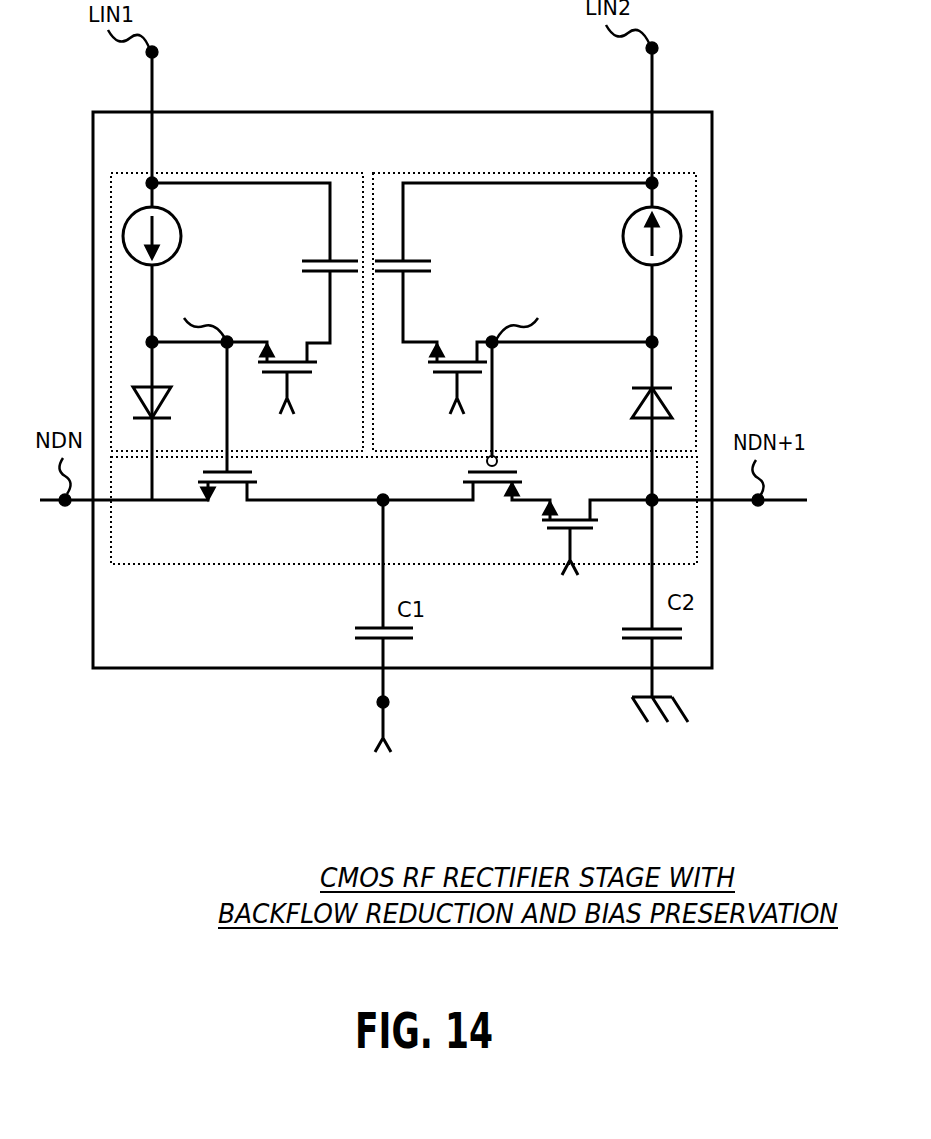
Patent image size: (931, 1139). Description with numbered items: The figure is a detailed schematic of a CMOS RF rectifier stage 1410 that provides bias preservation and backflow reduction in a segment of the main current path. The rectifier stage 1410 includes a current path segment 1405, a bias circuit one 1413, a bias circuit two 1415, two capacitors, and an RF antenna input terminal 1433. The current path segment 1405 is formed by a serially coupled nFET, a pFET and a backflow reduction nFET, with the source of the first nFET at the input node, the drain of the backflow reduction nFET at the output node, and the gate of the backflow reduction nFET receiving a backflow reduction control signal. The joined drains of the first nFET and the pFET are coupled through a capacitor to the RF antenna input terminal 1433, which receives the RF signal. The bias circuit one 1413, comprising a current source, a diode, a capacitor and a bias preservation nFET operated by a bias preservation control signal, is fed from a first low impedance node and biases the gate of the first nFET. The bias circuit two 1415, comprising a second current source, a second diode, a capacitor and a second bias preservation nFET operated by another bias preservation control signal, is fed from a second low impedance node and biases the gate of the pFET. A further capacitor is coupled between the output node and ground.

The CMOS RF rectifier stage 1410 is at (265, 144).
The bias circuit1 1413 is at (237, 216).
The bias circuit2 1415 is at (492, 216).
The current path segment 1405 is at (199, 561).
The RF antenna input terminal 1433 is at (382, 702).